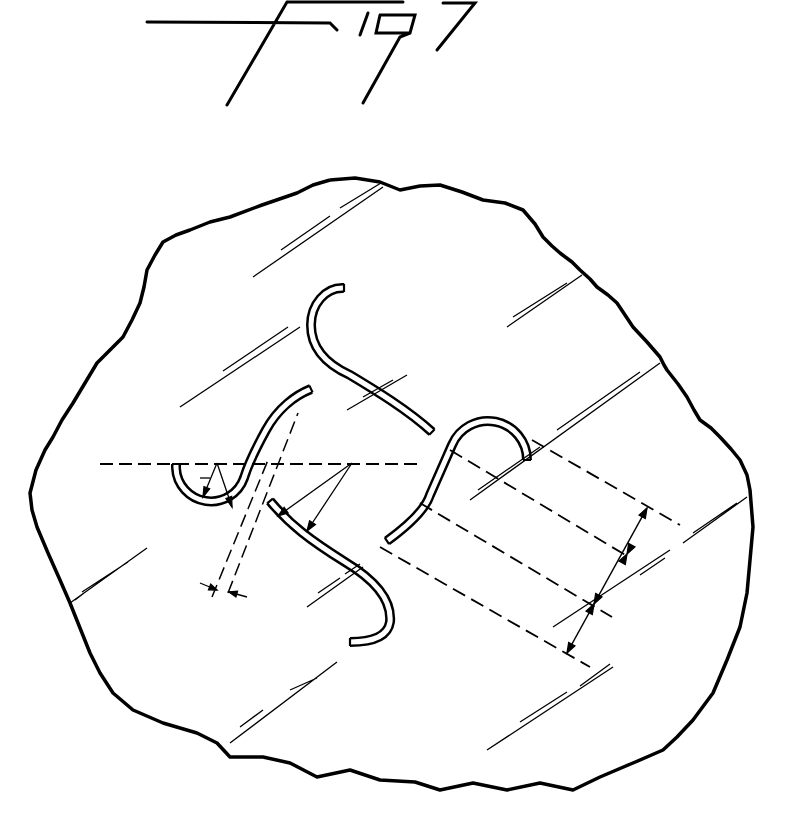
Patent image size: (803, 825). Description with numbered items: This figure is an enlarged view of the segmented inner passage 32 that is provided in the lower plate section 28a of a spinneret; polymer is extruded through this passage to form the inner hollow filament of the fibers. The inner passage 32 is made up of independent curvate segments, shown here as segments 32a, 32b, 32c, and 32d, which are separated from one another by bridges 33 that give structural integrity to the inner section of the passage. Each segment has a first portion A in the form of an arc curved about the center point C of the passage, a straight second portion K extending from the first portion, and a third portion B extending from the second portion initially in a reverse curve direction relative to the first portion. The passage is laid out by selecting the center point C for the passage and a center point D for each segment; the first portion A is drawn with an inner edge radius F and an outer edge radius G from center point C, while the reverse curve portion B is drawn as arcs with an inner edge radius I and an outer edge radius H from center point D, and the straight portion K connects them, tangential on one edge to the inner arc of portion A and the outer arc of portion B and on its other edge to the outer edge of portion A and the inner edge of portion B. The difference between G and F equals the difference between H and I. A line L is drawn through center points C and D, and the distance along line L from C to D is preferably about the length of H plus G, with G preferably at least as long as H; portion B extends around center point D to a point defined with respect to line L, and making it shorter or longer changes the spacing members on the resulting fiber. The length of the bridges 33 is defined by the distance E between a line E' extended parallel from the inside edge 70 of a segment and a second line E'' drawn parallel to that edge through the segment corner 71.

The lower plate section 28a is at (240, 335).
The segmented inner passage 32 is at (392, 313).
The passage segment 32a is at (388, 398).
The passage segment 32b is at (517, 430).
The passage segment 32c is at (358, 645).
The passage segment 32d is at (183, 493).
The bridges 33 is at (437, 437).
The inside edge 70 is at (287, 417).
The segment corner 71 is at (245, 517).
The line L is at (120, 463).
The center point D is at (217, 471).
The inner edge radius I is at (201, 478).
The outer edge radius H is at (240, 478).
The center point C is at (352, 463).
The outer edge radius G is at (322, 485).
The inner edge radius F is at (331, 495).
The distance E is at (223, 624).
The line E' is at (197, 557).
The second line E'' is at (273, 575).
The third portion B is at (637, 530).
The second portion K is at (610, 577).
The first portion A is at (580, 628).